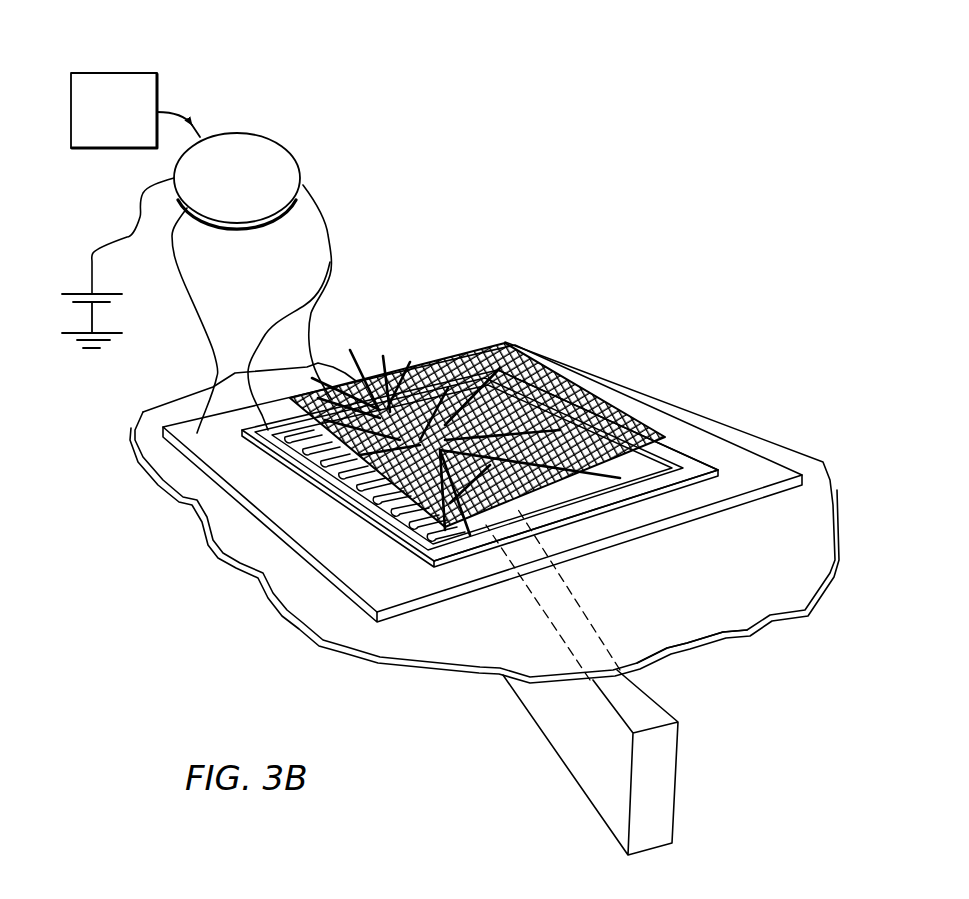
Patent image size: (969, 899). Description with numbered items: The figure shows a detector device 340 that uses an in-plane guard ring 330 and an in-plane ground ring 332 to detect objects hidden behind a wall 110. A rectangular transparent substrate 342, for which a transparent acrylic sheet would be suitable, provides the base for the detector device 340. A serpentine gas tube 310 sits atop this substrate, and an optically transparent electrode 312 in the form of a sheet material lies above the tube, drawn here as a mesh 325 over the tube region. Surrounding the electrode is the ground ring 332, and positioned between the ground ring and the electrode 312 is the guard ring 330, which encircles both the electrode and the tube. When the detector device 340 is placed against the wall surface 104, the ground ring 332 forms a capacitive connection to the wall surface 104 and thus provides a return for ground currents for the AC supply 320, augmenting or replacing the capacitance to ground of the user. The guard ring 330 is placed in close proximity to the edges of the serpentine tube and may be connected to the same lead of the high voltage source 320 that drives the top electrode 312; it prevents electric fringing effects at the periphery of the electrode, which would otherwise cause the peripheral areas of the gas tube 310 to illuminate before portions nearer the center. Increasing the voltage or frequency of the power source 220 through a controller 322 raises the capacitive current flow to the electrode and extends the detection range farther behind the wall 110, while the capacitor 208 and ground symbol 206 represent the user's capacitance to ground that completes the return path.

The controller 322 is at (125, 73).
The AC supply 320 is at (250, 135).
The ground capacitance Cg 208 is at (105, 293).
The ground 206 is at (80, 333).
The detector device 340 is at (514, 200).
The conductive mesh 325 is at (490, 482).
The electrode 312 is at (652, 427).
The serpentine gas tube 310 is at (660, 462).
The transparent substrate 342 is at (690, 473).
The ground ring 332 is at (253, 517).
The guard ring 330 is at (431, 558).
The wall surface 104 is at (633, 641).
The wall 110 is at (748, 632).
The AC source 220 is at (590, 760).